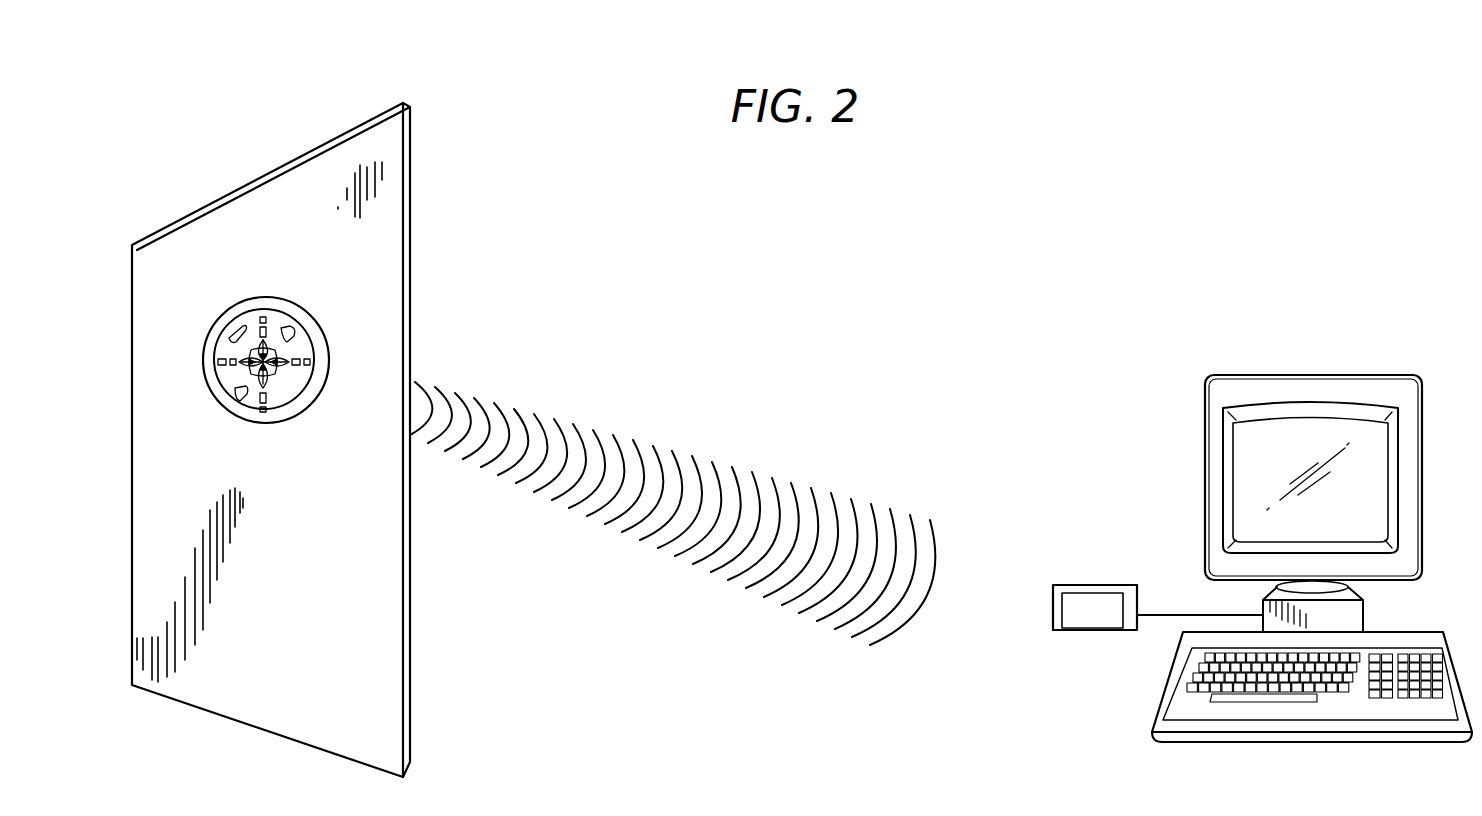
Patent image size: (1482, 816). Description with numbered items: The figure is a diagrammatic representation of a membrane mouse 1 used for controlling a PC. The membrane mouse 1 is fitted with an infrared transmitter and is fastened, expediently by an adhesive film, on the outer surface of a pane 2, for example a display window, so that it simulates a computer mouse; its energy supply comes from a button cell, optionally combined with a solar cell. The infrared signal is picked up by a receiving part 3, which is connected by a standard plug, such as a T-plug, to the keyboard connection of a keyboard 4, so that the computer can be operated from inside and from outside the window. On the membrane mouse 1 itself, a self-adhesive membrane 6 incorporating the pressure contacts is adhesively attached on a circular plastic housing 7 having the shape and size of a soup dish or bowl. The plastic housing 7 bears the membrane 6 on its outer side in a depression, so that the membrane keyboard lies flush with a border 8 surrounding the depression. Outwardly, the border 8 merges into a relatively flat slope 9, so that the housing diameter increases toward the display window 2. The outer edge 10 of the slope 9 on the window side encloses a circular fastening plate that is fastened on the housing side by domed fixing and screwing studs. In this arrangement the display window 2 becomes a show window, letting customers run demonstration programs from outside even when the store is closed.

The membrane mouse 1 is at (265, 357).
The pane 2 is at (405, 273).
The receiving part 3 is at (1104, 585).
The keyboard 4 is at (1440, 428).
The self-adhesive membrane 6 is at (293, 380).
The plastic housing 7 is at (312, 325).
The border 8 is at (212, 375).
The slope 9 is at (248, 415).
The outer edge 10 is at (280, 425).